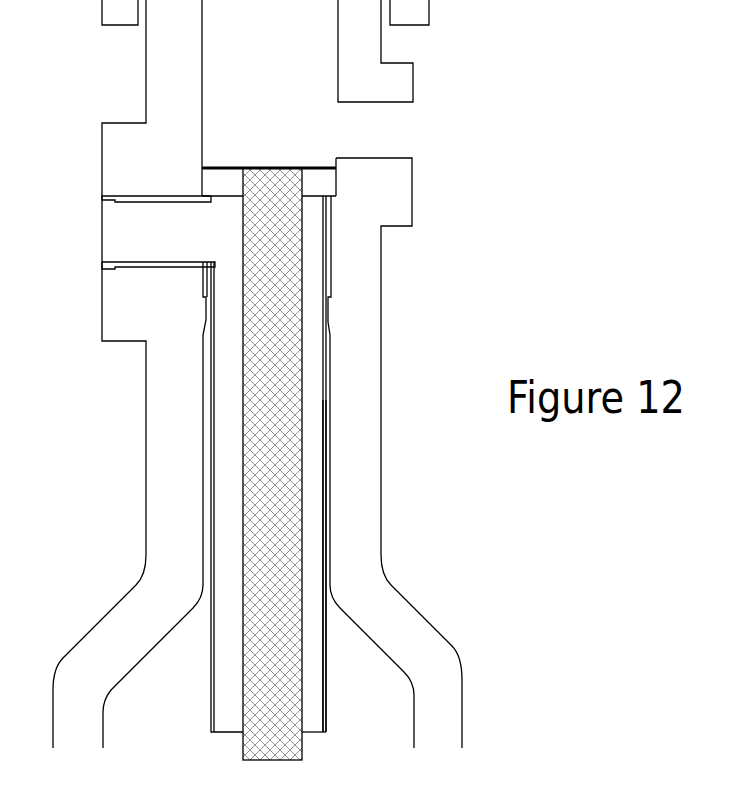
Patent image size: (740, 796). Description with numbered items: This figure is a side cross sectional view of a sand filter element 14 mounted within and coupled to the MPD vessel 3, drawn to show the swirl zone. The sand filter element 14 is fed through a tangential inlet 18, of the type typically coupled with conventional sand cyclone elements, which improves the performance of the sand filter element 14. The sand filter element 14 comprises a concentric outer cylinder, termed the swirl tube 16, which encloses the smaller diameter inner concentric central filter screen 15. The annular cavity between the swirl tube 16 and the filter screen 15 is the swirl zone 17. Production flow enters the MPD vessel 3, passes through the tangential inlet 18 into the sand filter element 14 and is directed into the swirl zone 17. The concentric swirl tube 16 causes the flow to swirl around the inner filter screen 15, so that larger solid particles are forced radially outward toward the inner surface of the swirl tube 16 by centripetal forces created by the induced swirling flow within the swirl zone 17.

The sand filter element 14 is at (270, 140).
The tangential inlet 18 is at (133, 232).
The MPD vessel 3 is at (350, 437).
The swirl zone 17 is at (310, 343).
The swirl tube 16 is at (328, 523).
The filter screen 15 is at (302, 609).